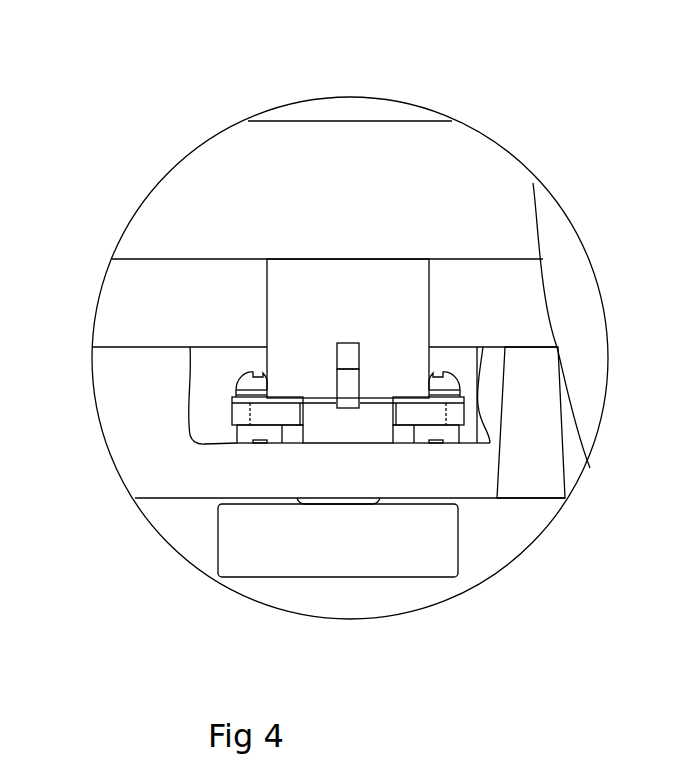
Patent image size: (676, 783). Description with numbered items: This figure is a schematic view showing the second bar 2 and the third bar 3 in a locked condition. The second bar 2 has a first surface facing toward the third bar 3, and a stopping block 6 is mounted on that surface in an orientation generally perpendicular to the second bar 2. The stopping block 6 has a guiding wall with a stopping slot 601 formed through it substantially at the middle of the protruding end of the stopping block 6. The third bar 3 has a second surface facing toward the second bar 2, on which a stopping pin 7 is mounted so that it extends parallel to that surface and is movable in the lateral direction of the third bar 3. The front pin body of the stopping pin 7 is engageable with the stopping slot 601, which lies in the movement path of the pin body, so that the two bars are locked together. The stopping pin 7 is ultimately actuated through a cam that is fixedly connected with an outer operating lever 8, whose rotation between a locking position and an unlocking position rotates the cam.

The second bar 2 is at (500, 226).
The stopping block 6 is at (385, 293).
The stopping slot 601 is at (345, 352).
The stopping pin 7 is at (348, 389).
The third bar 3 is at (160, 443).
The operating lever 8 is at (253, 548).